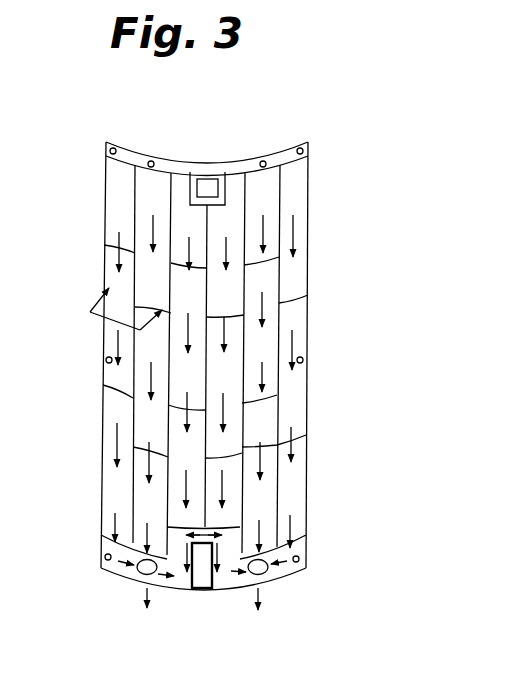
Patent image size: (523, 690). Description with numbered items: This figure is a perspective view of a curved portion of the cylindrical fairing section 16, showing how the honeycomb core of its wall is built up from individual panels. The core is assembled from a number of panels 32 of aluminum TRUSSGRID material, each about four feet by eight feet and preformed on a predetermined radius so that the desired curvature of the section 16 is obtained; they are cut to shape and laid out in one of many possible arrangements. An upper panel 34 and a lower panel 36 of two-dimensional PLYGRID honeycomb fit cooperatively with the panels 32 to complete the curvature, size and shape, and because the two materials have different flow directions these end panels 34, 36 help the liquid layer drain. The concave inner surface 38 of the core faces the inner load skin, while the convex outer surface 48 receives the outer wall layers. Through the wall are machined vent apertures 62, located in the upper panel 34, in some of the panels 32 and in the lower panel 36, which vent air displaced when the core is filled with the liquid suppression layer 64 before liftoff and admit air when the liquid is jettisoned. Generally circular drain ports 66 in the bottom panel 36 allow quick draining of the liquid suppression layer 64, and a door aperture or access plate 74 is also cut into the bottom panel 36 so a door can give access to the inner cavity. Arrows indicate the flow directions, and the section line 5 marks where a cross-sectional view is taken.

The section 16 is at (368, 222).
The panels 32 is at (292, 290).
The upper panel 34 is at (186, 167).
The lower panel 36 is at (120, 568).
The inner surface 38 is at (253, 153).
The outer surface 48 is at (218, 378).
The vent apertures 62 is at (108, 142).
The liquid suppression layer 64 is at (292, 195).
The drain ports 66 is at (152, 572).
The door aperture 74 is at (207, 580).
The section line 5- 5 is at (128, 303).